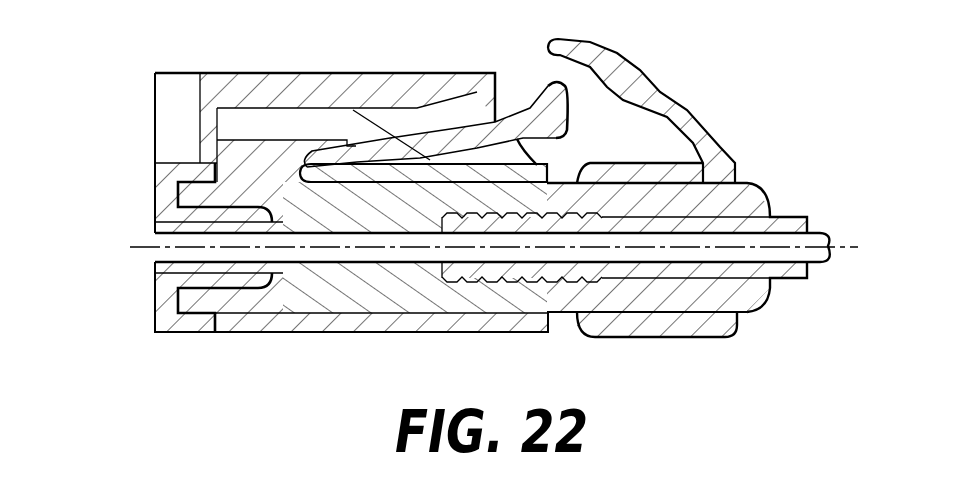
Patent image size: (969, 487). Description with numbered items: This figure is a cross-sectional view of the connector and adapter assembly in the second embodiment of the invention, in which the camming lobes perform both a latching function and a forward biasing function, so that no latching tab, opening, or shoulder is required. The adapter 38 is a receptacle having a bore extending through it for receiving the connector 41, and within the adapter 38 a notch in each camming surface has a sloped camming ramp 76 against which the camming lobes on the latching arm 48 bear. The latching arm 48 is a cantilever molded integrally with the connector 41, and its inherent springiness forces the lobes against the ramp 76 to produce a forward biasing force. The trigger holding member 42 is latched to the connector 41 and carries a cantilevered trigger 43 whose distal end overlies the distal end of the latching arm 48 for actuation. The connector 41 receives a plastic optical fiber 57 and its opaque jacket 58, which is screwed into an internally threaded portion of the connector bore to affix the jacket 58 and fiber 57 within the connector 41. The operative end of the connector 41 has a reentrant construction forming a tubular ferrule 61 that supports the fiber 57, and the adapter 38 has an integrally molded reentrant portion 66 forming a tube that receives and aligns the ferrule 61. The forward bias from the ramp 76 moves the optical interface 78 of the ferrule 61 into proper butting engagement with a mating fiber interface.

The adapter 38 is at (253, 73).
The camming ramp 76 is at (373, 121).
The trigger 43 is at (637, 53).
The latching arm 48 is at (565, 105).
The jacket 58 is at (793, 216).
The reentrant portion 66 is at (178, 205).
The tubular ferrule 61 is at (175, 268).
The optical interface 78 is at (176, 292).
The plastic optical fiber 57 is at (812, 264).
The trigger holding member 42 is at (640, 338).
The connector 41 is at (760, 306).